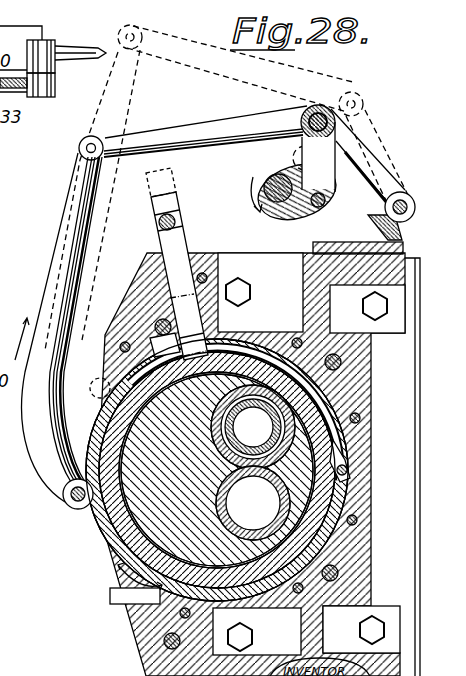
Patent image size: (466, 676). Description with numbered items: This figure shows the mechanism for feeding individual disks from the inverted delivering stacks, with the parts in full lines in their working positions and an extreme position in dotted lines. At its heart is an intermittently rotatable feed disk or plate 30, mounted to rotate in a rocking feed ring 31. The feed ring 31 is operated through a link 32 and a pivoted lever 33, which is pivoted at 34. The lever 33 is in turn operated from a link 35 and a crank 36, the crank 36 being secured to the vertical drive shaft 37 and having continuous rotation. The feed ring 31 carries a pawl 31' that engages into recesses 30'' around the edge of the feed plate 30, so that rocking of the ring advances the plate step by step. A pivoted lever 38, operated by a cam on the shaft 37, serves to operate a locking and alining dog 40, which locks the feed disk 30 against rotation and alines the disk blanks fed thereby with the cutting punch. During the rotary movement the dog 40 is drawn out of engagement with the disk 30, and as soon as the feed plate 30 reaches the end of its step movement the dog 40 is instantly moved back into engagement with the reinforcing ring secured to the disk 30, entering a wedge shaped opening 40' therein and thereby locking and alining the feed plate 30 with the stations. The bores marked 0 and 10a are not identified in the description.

The bore 0 is at (272, 499).
The shaft bore 10a is at (253, 427).
The feed disk 30 is at (94, 370).
The recesses 30'' is at (253, 459).
The feed ring 31 is at (192, 470).
The pawl 31' is at (368, 453).
The link 32 is at (82, 49).
The pivoted lever 33 is at (207, 127).
The pivot 34 is at (410, 192).
The link 35 is at (320, 143).
The crank 36 is at (295, 213).
The vertical drive shaft 37 is at (262, 181).
The pivoted lever 38 is at (182, 223).
The locking and alining dog 40 is at (160, 264).
The wedge shaped opening 40' is at (140, 316).